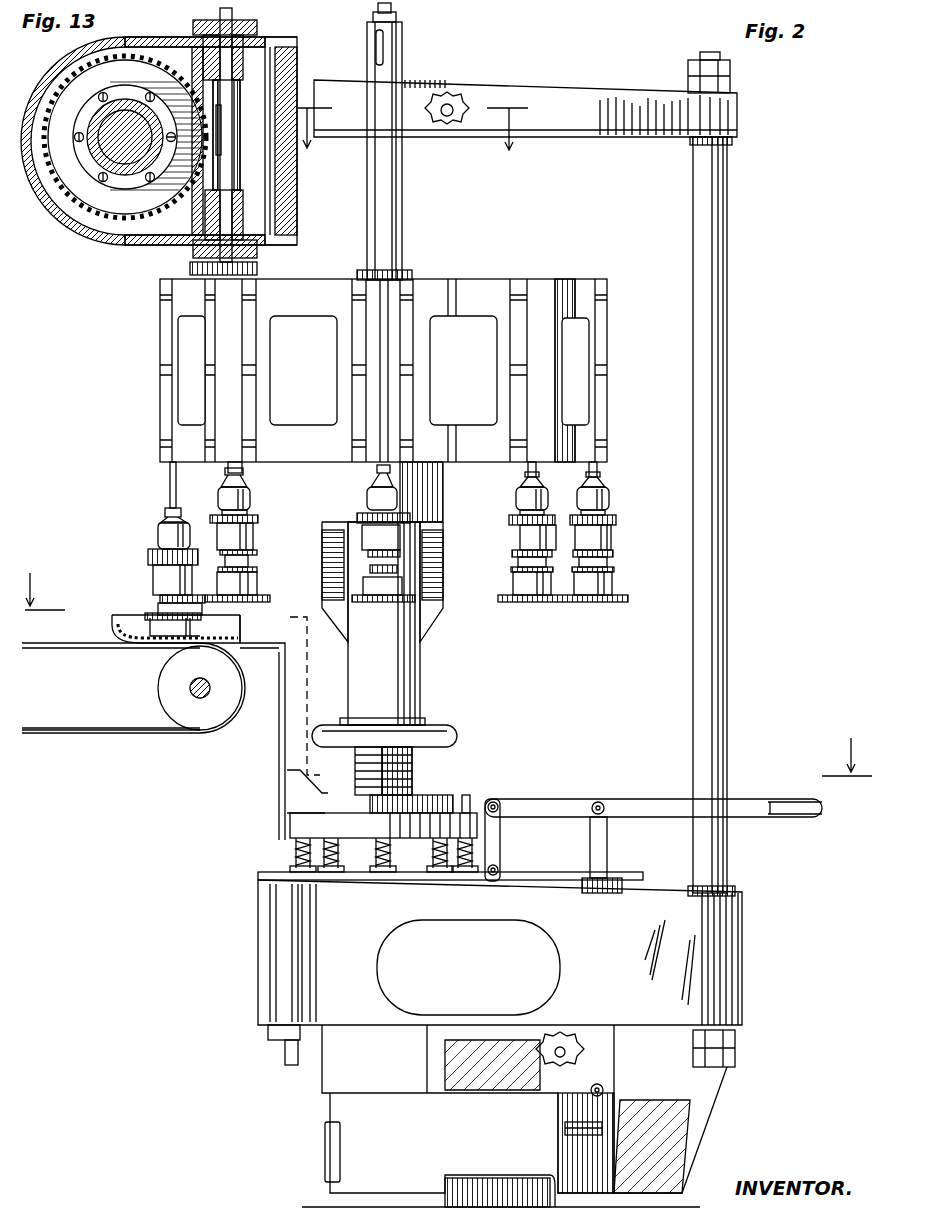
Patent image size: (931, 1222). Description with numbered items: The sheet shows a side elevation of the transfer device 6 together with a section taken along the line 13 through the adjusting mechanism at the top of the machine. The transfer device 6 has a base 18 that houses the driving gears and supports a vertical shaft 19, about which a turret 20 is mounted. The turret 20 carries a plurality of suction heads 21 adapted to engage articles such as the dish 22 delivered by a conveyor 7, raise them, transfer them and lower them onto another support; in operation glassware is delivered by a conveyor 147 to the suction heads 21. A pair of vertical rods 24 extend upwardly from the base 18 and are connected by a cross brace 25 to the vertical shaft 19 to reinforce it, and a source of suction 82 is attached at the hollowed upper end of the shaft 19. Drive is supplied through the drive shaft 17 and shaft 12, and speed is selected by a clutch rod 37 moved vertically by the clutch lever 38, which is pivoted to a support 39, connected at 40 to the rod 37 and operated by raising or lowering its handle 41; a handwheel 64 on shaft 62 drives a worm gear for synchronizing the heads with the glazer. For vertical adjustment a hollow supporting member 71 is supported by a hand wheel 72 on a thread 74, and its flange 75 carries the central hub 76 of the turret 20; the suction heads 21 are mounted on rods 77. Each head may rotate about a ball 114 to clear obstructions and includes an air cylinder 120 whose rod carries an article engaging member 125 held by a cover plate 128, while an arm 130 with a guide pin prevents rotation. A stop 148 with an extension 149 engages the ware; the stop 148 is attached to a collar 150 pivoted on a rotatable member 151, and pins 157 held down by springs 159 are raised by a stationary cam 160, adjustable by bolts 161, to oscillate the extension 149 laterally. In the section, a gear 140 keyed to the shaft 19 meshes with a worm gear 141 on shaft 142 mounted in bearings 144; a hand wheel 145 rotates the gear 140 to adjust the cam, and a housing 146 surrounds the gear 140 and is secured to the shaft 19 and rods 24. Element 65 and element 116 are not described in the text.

In FIG. 2, the transfer device 6 is at (600, 244).
In FIG. 2, the conveyor 7 is at (42, 725).
In FIG. 2, the shaft 12 is at (448, 689).
In FIG. 2, the section line 13- 13 is at (418, 139).
In FIG. 2, the drive shaft 17 is at (585, 1140).
In FIG. 2, the base 18 is at (695, 1125).
In FIG. 13, the vertical shaft 19 is at (108, 188).
In FIG. 2, the vertical shaft 19 is at (402, 212).
In FIG. 2, the turret 20 is at (476, 268).
In FIG. 2, the suction heads 21 is at (620, 527).
In FIG. 2, the dish 22 is at (125, 643).
In FIG. 2, the vertical rods 24 is at (728, 392).
In FIG. 13, the cross brace 25 is at (284, 229).
In FIG. 2, the cross brace 25 is at (598, 100).
In FIG. 2, the clutch rod 37 is at (607, 848).
In FIG. 2, the clutch lever 38 is at (656, 800).
In FIG. 2, the support 39 is at (500, 838).
In FIG. 2, the connection 40 is at (600, 802).
In FIG. 2, the handle 41 is at (795, 816).
In FIG. 2, the shaft 62 is at (554, 1055).
In FIG. 2, the handwheel 64 is at (568, 1030).
In FIG. 2, the pin 65 is at (285, 1058).
In FIG. 2, the hollow supporting member 71 is at (420, 668).
In FIG. 2, the hand wheel 72 is at (445, 728).
In FIG. 2, the thread 74 is at (408, 768).
In FIG. 2, the flange 75 is at (443, 524).
In FIG. 2, the central hub 76 is at (443, 487).
In FIG. 2, the rods 77 is at (169, 478).
In FIG. 2, the source of suction 82 is at (392, 12).
In FIG. 2, the ball 114 is at (165, 513).
In FIG. 2, the head 116 is at (157, 540).
In FIG. 2, the air cylinder 120 is at (252, 530).
In FIG. 2, the article engaging member 125 is at (257, 594).
In FIG. 2, the cover plate 128 is at (257, 575).
In FIG. 2, the arm 130 is at (255, 562).
In FIG. 13, the gear 140 is at (112, 205).
In FIG. 13, the worm gear 141 is at (232, 160).
In FIG. 13, the shaft 142 is at (212, 256).
In FIG. 2, the shaft 142 is at (447, 116).
In FIG. 13, the bearings 144 is at (238, 60).
In FIG. 13, the hand wheel 145 is at (258, 268).
In FIG. 2, the hand wheel 145 is at (452, 98).
In FIG. 13, the housing 146 is at (105, 162).
In FIG. 2, the conveyor 147 is at (95, 733).
In FIG. 2, the stop 148 is at (248, 650).
In FIG. 2, the extension 149 is at (140, 618).
In FIG. 2, the collar 150 is at (290, 792).
In FIG. 2, the rotatable member 151 is at (292, 828).
In FIG. 2, the pins 157 is at (470, 805).
In FIG. 2, the springs 159 is at (296, 855).
In FIG. 2, the stationary cam 160 is at (395, 880).
In FIG. 2, the bolts 161 is at (290, 870).